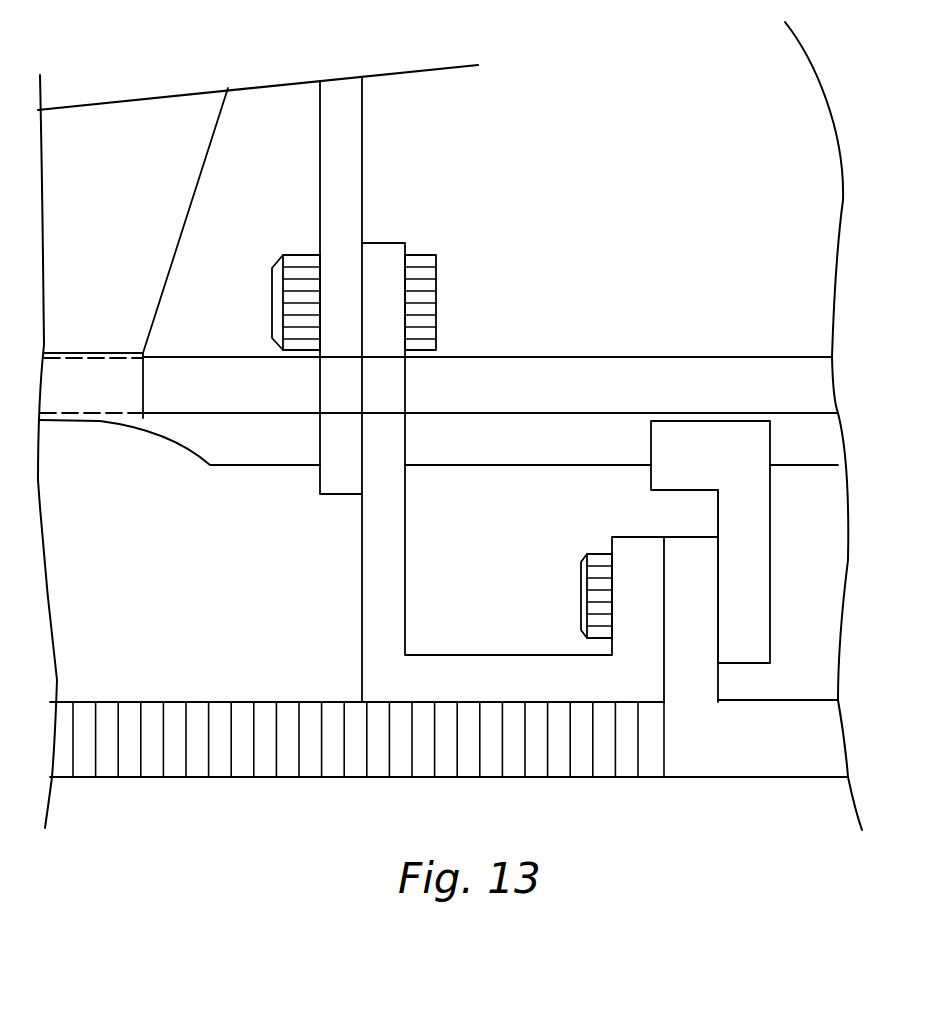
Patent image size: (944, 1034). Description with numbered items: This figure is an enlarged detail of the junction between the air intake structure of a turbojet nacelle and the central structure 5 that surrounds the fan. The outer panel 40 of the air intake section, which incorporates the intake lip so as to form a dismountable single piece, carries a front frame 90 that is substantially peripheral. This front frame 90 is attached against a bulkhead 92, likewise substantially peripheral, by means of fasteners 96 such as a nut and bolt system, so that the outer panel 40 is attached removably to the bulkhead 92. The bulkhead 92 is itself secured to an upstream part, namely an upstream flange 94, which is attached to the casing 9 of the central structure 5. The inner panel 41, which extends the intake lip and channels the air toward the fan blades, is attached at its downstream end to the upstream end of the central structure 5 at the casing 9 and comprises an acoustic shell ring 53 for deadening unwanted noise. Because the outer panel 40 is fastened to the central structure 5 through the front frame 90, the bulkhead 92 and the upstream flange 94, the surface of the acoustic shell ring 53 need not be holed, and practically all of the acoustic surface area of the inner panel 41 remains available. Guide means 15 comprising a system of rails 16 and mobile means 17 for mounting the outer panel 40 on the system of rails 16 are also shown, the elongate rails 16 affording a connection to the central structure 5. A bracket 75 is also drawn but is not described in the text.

The central structure 5 is at (728, 778).
The casing 9 is at (792, 740).
The guide means 15 is at (572, 345).
The system of rails 16 is at (723, 381).
The mobile means 17 is at (104, 152).
The outer panel 40 is at (291, 80).
The inner panel 41 is at (115, 795).
The acoustic shell ring 53 is at (218, 748).
The mounting bracket 75 is at (740, 563).
The front frame 90 is at (337, 147).
The bulkhead 92 is at (378, 260).
The upstream flange 94 is at (550, 680).
The fasteners 96 is at (293, 303).